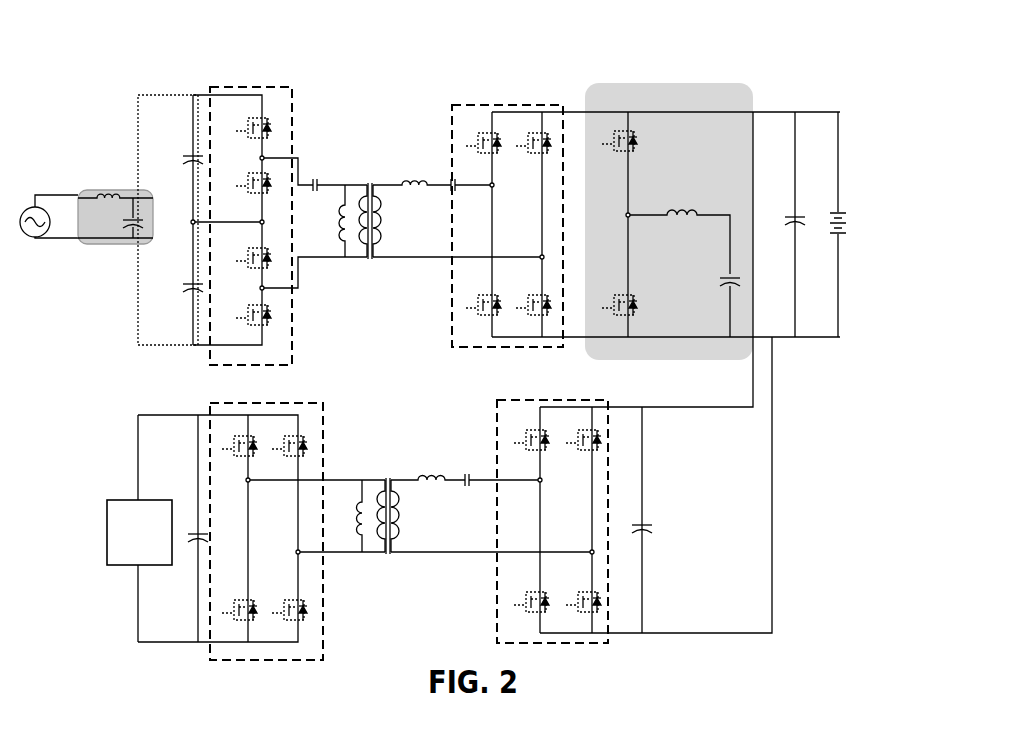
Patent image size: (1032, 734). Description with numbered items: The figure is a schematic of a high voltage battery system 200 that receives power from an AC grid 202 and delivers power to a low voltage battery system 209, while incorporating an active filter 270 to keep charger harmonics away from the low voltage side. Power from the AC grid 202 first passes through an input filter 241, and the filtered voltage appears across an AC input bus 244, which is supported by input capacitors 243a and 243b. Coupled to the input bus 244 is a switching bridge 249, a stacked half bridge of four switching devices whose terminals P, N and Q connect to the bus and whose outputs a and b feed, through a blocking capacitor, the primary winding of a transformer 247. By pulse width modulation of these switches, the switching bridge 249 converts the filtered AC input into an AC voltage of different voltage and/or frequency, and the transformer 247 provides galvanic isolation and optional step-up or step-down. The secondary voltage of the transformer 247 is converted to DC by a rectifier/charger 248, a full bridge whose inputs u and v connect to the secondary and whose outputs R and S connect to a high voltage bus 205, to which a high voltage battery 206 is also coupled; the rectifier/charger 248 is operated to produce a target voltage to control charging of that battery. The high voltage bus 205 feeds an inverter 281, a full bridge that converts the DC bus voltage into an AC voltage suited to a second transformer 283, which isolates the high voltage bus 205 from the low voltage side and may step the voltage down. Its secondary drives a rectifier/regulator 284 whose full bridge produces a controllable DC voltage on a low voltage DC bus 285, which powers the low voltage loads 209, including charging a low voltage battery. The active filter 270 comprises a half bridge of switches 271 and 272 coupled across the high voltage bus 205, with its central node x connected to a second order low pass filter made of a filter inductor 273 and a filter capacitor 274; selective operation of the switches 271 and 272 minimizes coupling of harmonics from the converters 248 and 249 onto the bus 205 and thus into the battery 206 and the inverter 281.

The high voltage battery system 200 is at (412, 92).
The AC grid 202 is at (27, 204).
The high voltage bus 205 is at (775, 112).
The high voltage battery 206 is at (843, 210).
The low voltage battery system 209 is at (132, 500).
The input filter 241 is at (97, 190).
The input capacitor 243a is at (182, 152).
The input capacitor 243b is at (182, 293).
The AC input bus 244 is at (165, 94).
The transformer 247 is at (363, 183).
The rectifier/charger 248 is at (478, 105).
The switching bridge 249 is at (237, 87).
The active filter 270 is at (642, 83).
The switch 271 is at (638, 141).
The switch 272 is at (640, 296).
The filter inductor 273 is at (673, 212).
The filter capacitor 274 is at (723, 284).
The inverter 281 is at (522, 400).
The transformer 283 is at (388, 478).
The rectifier/regulator 284 is at (237, 403).
The low voltage DC bus 285 is at (157, 415).